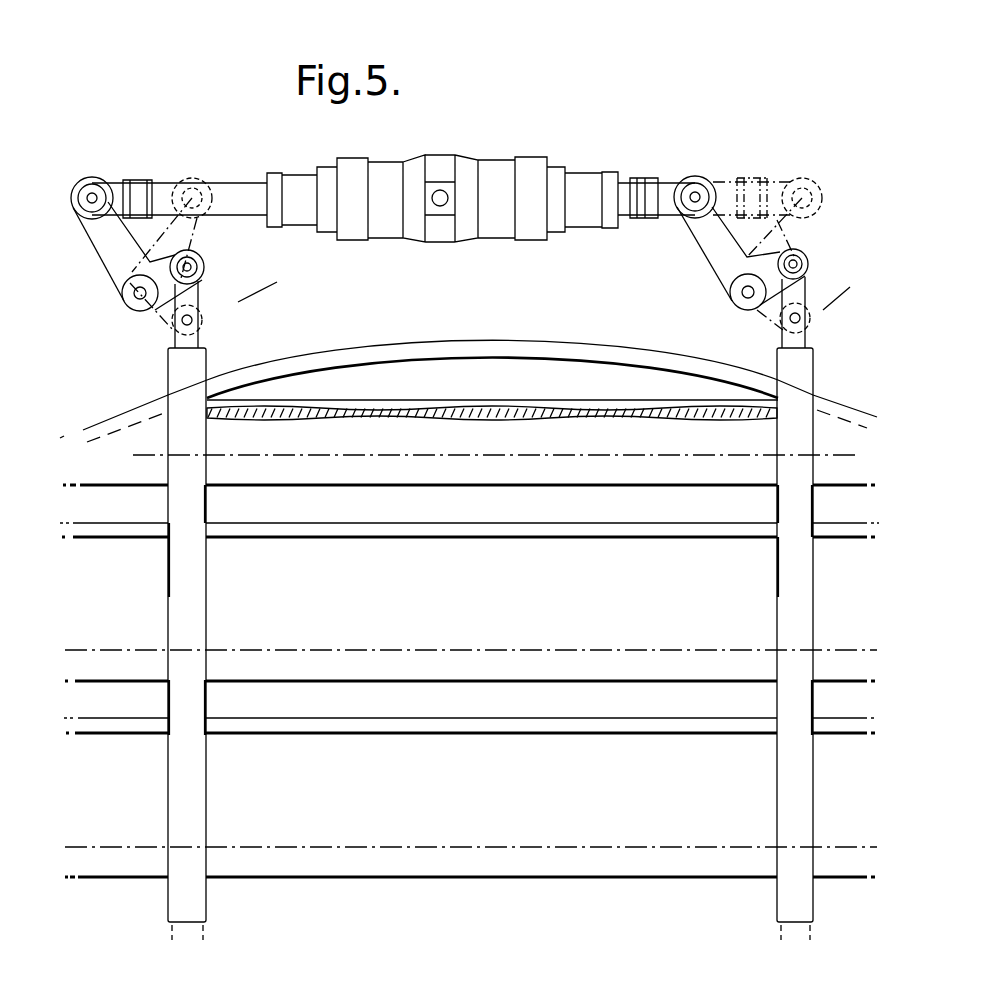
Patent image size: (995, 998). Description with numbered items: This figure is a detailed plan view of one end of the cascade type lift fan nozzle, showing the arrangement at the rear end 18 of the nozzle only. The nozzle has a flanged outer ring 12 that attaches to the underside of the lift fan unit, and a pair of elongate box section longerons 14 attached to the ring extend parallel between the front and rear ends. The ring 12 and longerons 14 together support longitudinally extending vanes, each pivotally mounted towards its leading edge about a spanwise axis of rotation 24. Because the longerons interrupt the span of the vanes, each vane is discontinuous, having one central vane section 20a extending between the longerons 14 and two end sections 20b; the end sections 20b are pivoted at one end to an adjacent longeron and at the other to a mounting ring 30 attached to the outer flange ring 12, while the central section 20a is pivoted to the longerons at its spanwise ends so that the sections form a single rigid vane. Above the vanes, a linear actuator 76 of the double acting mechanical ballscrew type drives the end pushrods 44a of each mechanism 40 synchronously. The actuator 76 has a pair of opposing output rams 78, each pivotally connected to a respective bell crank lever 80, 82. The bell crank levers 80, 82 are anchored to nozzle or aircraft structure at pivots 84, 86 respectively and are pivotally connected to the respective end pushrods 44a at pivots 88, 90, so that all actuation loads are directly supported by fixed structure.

The flanged outer ring 12 is at (493, 340).
The longerons 14 is at (167, 375).
The rear end 18 is at (430, 338).
The central vane section 20a is at (408, 451).
The end vane sections 20b is at (138, 596).
The spanwise axis of rotation 24 is at (597, 452).
The mounting ring 30 is at (483, 392).
The mechanism 40 is at (238, 302).
The end pushrods 44a is at (203, 340).
The linear actuator 76 is at (495, 157).
The output rams 78 is at (238, 185).
The bell crank lever 80 is at (98, 258).
The bell crank lever 82 is at (697, 242).
The pivot 84 is at (140, 297).
The pivot 86 is at (743, 295).
The pivot 88 is at (207, 263).
The pivot 90 is at (797, 258).